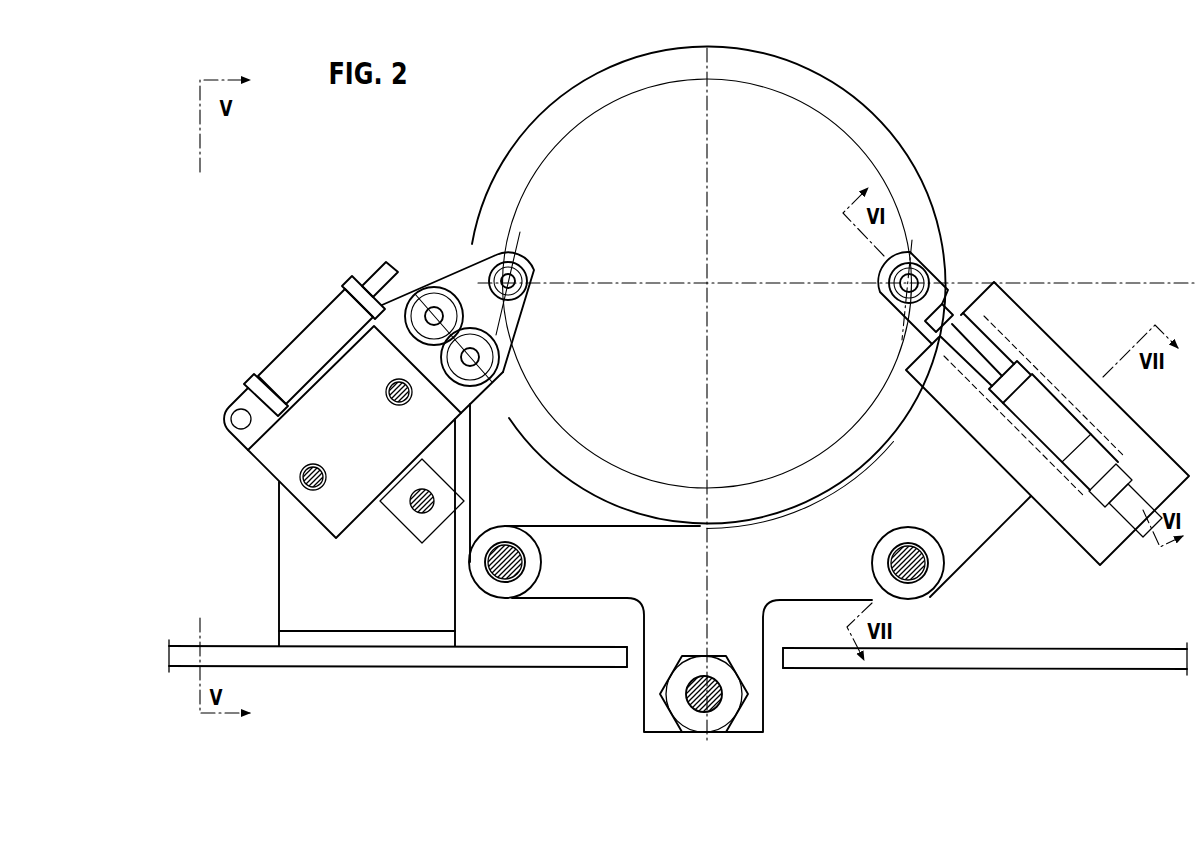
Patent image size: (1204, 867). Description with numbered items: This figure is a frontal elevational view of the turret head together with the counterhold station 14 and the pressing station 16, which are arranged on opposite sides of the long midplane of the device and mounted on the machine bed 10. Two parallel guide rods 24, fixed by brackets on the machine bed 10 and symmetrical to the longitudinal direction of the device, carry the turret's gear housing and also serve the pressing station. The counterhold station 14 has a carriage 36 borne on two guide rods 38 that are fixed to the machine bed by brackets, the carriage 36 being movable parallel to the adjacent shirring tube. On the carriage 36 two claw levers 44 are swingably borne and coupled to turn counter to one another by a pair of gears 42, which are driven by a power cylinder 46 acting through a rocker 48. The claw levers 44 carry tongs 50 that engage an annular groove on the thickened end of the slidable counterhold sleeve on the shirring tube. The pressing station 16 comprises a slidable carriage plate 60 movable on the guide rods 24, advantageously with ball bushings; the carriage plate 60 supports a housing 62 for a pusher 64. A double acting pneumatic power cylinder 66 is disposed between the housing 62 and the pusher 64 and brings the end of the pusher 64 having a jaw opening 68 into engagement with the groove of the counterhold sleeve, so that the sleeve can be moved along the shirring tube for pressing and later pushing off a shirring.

The machine bed 10 is at (431, 657).
The counterhold station 14 is at (243, 373).
The pressing station 16 is at (1047, 320).
The guide rods 24 is at (505, 600).
The carriage 36 is at (278, 457).
The guide rods 38 is at (390, 389).
The pair of gears 42 is at (418, 300).
The claw levers 44 is at (491, 300).
The power cylinder 46 is at (326, 338).
The rocker 48 is at (441, 265).
The tongs 50 is at (485, 262).
The carriage plate 60 is at (593, 570).
The housing 62 is at (1080, 530).
The pusher 64 is at (948, 290).
The pneumatic power cylinder 66 is at (1062, 455).
The jaw opening 68 is at (912, 252).